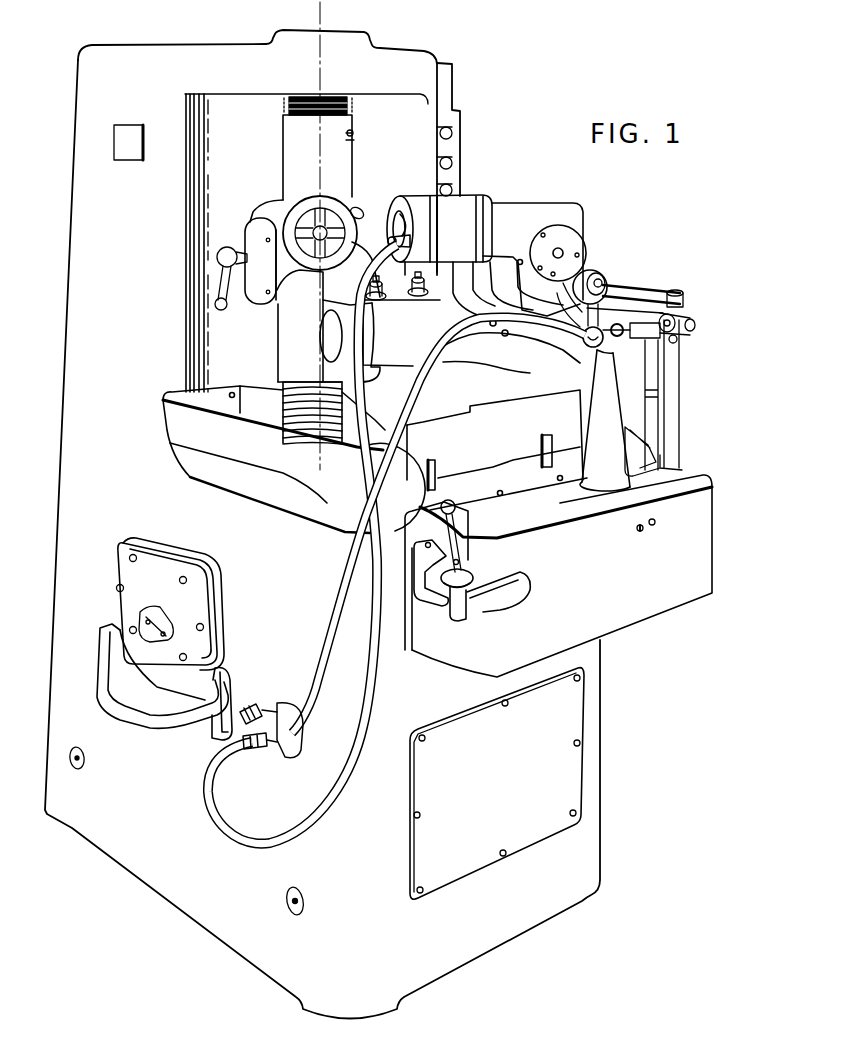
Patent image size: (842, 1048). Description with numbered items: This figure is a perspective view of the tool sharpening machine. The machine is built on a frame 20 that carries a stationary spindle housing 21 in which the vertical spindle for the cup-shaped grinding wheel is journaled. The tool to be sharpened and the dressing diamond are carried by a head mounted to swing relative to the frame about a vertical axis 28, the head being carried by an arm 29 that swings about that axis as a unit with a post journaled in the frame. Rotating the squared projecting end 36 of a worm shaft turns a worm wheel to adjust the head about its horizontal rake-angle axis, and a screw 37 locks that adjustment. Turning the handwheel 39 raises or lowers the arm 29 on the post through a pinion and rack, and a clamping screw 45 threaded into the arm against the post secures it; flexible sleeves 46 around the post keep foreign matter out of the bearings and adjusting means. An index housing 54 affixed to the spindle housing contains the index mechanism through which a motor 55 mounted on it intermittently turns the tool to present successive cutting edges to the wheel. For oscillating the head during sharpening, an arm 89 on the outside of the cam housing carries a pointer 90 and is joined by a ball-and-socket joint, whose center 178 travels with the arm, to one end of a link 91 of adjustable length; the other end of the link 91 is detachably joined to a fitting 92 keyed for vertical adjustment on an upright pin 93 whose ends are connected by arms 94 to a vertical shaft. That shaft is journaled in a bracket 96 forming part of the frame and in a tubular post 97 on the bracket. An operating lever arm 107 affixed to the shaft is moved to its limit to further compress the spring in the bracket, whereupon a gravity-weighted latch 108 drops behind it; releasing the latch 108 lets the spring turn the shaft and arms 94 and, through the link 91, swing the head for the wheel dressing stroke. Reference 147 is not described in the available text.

The frame 20 is at (284, 594).
The stationary spindle housing 21 is at (412, 178).
The vertical axis 28 is at (317, 158).
The arm 29 is at (295, 343).
The squared projecting end of the worm shaft 36 is at (441, 300).
The screw 37 is at (393, 299).
The handwheel 39 is at (288, 303).
The clamping screw 45 is at (232, 250).
The flexible sleeves 46 is at (330, 97).
The index housing 54 is at (567, 218).
The motor 55 is at (450, 228).
The arm 89 is at (603, 302).
The pointer 90 is at (585, 272).
The link 91 is at (632, 335).
The fitting 92 is at (694, 316).
The upright pin 93 is at (678, 350).
The arms 94 is at (682, 298).
The bracket 96 is at (680, 571).
The tubular post 97 is at (633, 416).
The operating lever arm 107 is at (483, 588).
The latch 108 is at (453, 542).
The column cover plate 147 is at (455, 122).
The center of the universal joint 178 is at (598, 348).